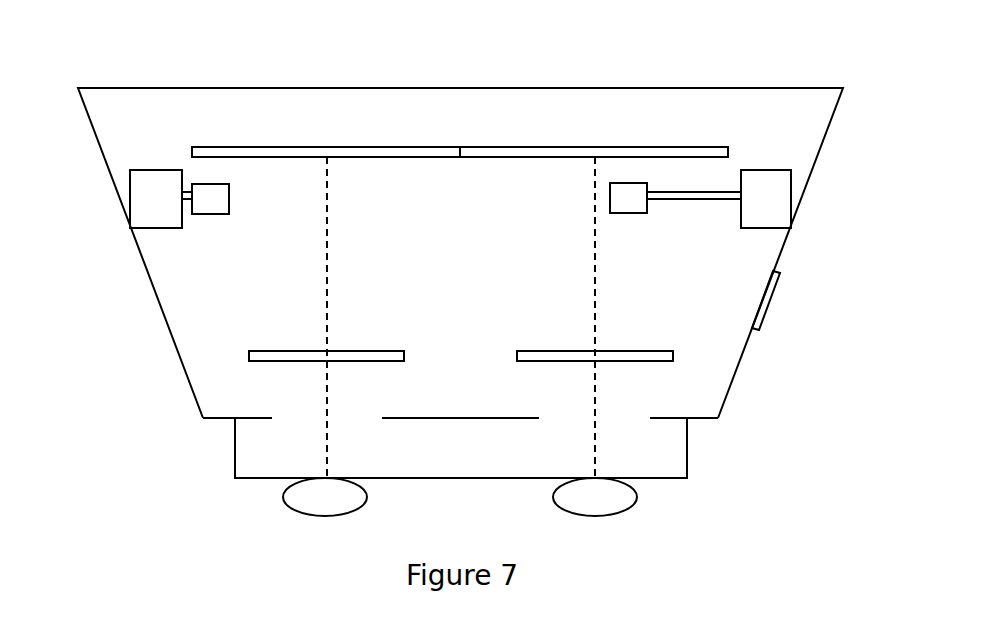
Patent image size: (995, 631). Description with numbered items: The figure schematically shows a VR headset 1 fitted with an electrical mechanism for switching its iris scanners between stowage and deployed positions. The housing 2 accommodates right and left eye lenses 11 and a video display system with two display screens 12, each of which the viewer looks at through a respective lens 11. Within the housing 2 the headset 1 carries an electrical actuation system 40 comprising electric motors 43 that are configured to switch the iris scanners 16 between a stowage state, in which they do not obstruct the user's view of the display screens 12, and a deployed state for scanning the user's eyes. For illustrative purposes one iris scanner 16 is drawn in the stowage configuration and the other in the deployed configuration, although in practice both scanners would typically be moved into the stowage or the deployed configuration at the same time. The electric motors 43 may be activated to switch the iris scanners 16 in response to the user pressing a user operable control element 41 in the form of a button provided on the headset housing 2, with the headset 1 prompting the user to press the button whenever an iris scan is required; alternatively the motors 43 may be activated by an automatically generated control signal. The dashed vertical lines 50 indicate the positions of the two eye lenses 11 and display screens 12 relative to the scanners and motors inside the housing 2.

The headset 1 is at (132, 75).
The housing 2 is at (706, 88).
The eye lenses 11 is at (247, 354).
The display screens 12 is at (405, 147).
The iris scanners 16 is at (210, 214).
The actuation system 40 is at (752, 160).
The user operable control element 41 is at (768, 312).
The electric motors 43 is at (132, 197).
The vertical axis line 50 is at (593, 265).